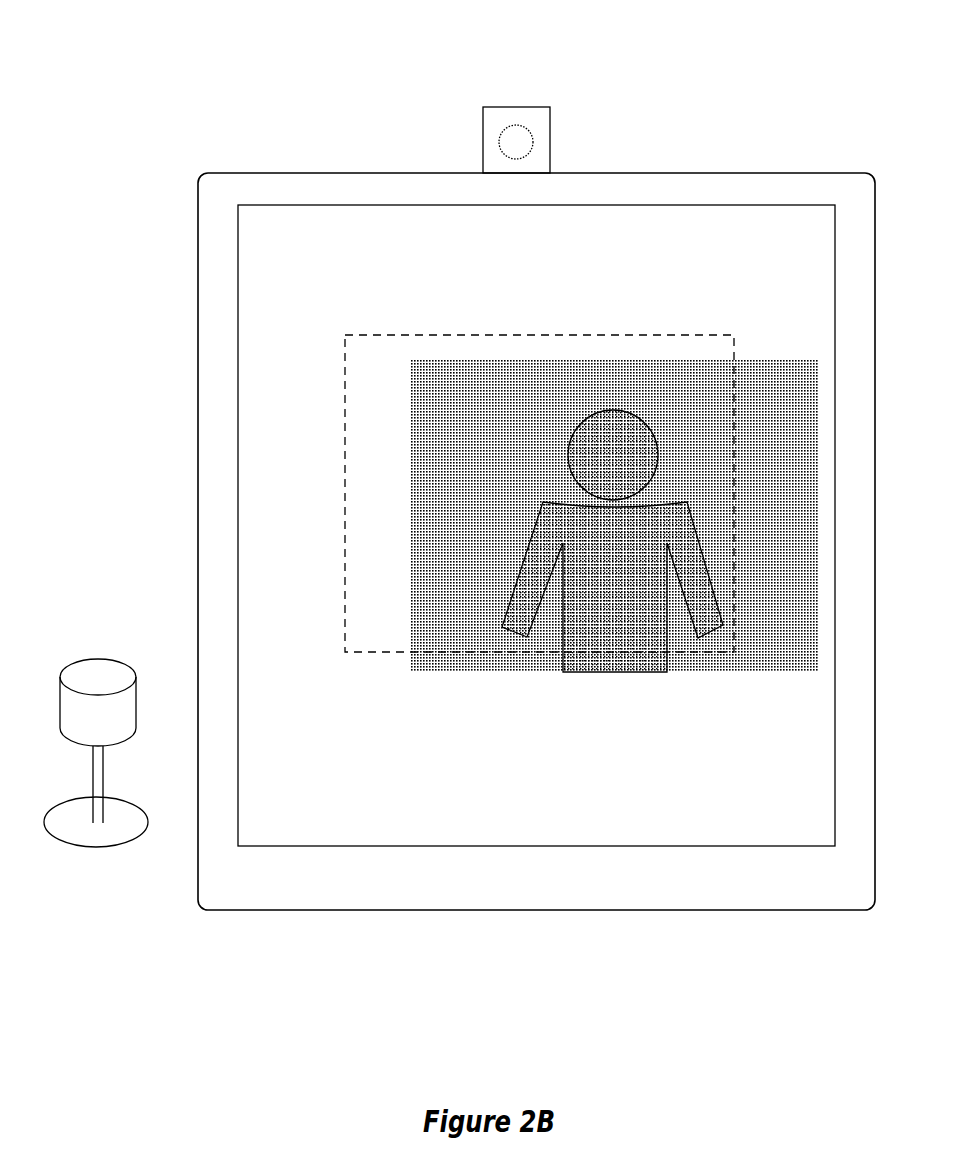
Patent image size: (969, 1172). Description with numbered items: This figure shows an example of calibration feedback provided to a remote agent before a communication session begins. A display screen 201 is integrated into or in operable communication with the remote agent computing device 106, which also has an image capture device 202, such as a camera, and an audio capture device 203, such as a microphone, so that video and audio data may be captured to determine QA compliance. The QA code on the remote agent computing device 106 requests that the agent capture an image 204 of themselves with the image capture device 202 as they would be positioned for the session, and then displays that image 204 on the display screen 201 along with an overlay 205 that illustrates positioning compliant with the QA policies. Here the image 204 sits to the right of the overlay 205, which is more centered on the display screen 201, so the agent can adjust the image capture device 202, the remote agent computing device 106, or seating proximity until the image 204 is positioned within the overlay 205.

The remote agent computing device 106 is at (499, 67).
The display screen 201 is at (599, 205).
The image capture device 202 is at (549, 127).
The audio capture device 203 is at (116, 660).
The image 204 is at (750, 347).
The overlay 205 is at (579, 335).